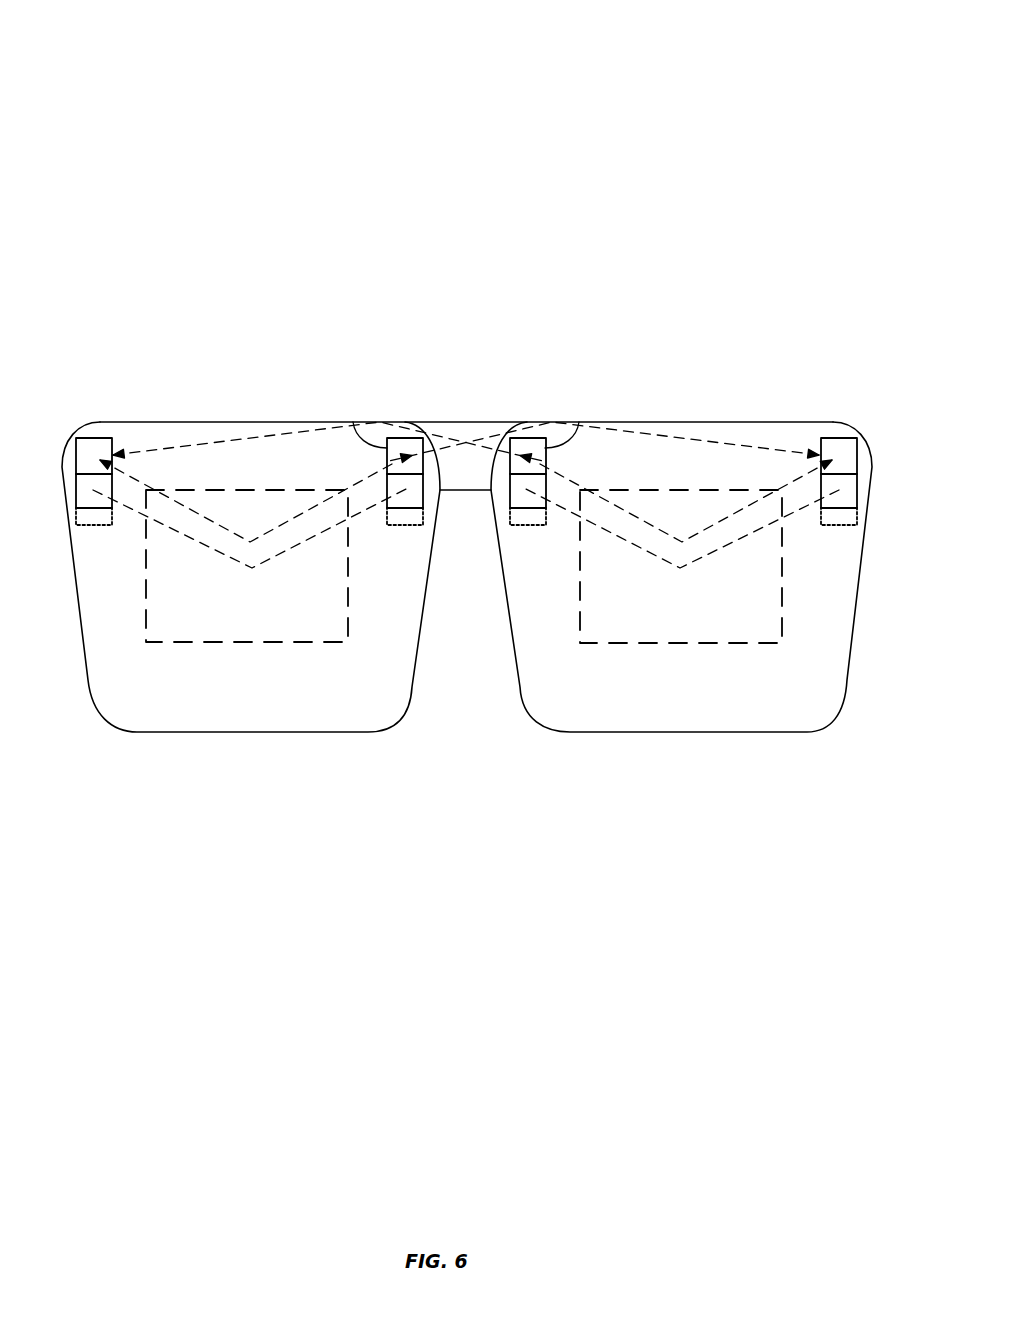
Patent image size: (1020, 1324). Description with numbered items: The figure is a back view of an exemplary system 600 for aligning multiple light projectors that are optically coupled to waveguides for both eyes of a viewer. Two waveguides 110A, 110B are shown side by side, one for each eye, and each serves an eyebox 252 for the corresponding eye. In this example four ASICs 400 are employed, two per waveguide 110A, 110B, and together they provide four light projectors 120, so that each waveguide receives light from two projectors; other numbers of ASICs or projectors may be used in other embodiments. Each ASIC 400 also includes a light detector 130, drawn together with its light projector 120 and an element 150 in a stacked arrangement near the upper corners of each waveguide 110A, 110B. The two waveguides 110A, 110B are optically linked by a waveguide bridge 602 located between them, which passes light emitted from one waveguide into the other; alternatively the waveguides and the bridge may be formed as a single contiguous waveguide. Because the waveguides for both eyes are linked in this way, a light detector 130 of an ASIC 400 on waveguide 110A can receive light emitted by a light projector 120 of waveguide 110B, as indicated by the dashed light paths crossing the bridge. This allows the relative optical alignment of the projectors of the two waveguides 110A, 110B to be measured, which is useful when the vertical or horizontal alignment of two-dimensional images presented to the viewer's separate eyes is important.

The system 600 is at (116, 104).
The ASIC 400 is at (868, 370).
The waveguide 110A is at (258, 422).
The waveguide 110B is at (690, 422).
The light detector 130 is at (78, 457).
The light projector 120 is at (78, 490).
The sensor 150 is at (78, 517).
The eyebox 252 is at (727, 793).
The waveguide bridge 602 is at (467, 490).